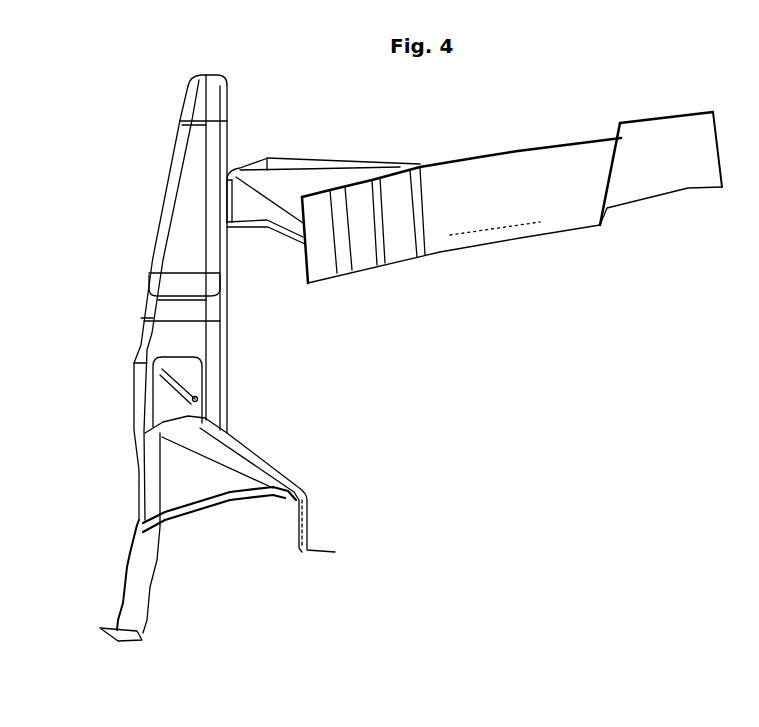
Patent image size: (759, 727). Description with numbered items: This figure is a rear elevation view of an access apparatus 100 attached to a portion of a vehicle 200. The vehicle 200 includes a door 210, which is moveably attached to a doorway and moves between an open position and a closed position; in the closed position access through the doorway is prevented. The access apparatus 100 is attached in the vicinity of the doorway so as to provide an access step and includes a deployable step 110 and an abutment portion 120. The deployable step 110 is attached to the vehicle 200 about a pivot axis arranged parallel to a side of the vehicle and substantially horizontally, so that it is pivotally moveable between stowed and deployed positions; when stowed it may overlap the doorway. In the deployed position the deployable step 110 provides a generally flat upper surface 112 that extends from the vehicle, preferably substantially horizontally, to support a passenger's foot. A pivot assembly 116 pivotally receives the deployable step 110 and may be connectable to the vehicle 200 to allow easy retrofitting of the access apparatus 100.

The access apparatus 100 is at (126, 151).
The deployable step 110 is at (203, 266).
The upper surface 112 is at (228, 131).
The pivot assembly 116 is at (153, 490).
The abutment portion 120 is at (296, 182).
The vehicle 200 is at (281, 604).
The door 210 is at (518, 163).